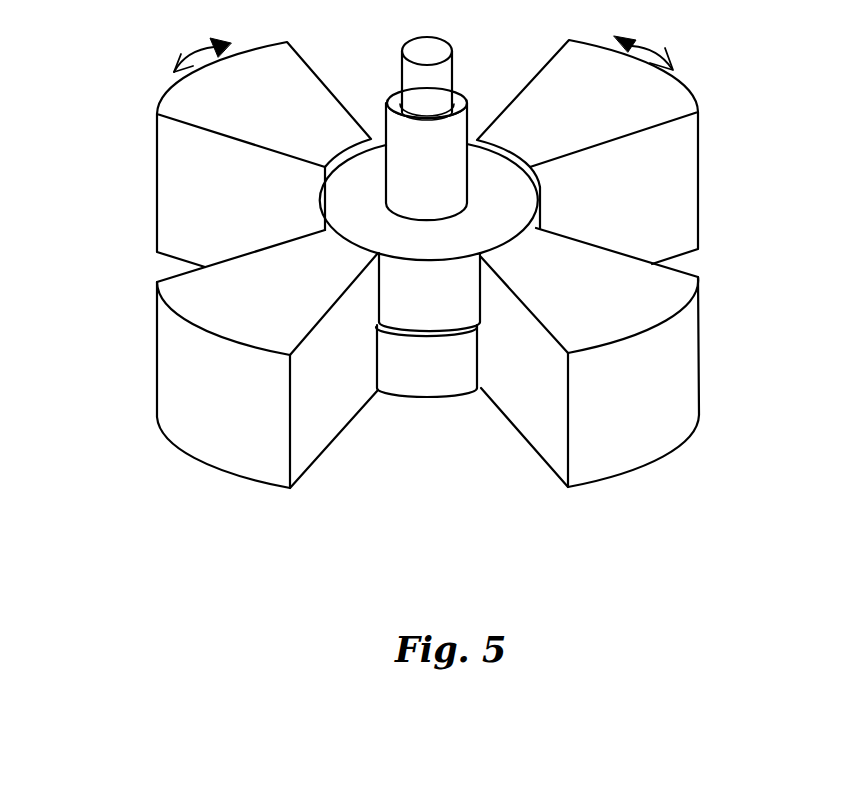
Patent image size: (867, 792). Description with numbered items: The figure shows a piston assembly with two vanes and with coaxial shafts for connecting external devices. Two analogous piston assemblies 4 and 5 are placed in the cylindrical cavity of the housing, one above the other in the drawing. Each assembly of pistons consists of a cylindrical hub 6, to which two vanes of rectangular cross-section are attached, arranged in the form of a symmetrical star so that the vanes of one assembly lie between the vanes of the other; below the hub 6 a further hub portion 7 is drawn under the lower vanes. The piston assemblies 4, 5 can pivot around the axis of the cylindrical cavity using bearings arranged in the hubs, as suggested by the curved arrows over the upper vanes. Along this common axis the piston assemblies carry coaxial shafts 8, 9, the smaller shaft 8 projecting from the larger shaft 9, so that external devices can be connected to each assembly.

The piston assembly 4 is at (157, 149).
The piston assembly 5 is at (156, 343).
The cylindrical hub 6 is at (413, 297).
The collar 7 is at (417, 360).
The coaxial shaft 8 is at (429, 79).
The coaxial shaft 9 is at (437, 162).